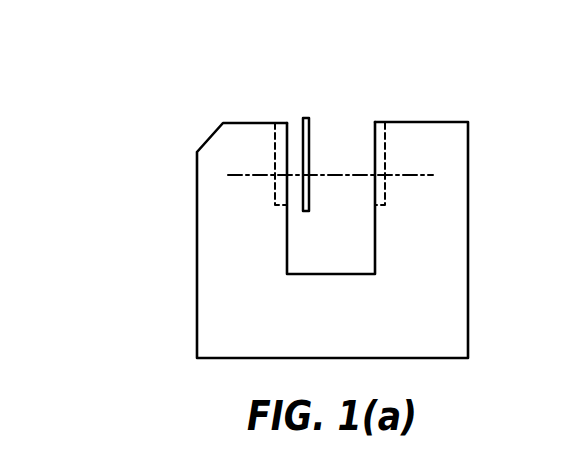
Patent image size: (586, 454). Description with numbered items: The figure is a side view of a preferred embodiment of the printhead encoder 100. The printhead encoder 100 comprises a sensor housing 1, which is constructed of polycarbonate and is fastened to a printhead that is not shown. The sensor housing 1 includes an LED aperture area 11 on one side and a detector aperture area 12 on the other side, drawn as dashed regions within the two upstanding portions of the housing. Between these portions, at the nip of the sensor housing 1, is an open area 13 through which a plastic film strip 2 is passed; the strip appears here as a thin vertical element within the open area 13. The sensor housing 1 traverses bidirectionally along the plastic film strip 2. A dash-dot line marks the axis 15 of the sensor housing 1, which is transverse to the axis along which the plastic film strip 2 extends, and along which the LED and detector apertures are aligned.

The printhead encoder 100 is at (128, 195).
The sensor housing 1 is at (440, 267).
The plastic film strip 2 is at (302, 120).
The LED aperture area 11 is at (276, 137).
The detector aperture area 12 is at (384, 137).
The open area 13 is at (343, 138).
The axis of the sensor housing 15 is at (417, 177).